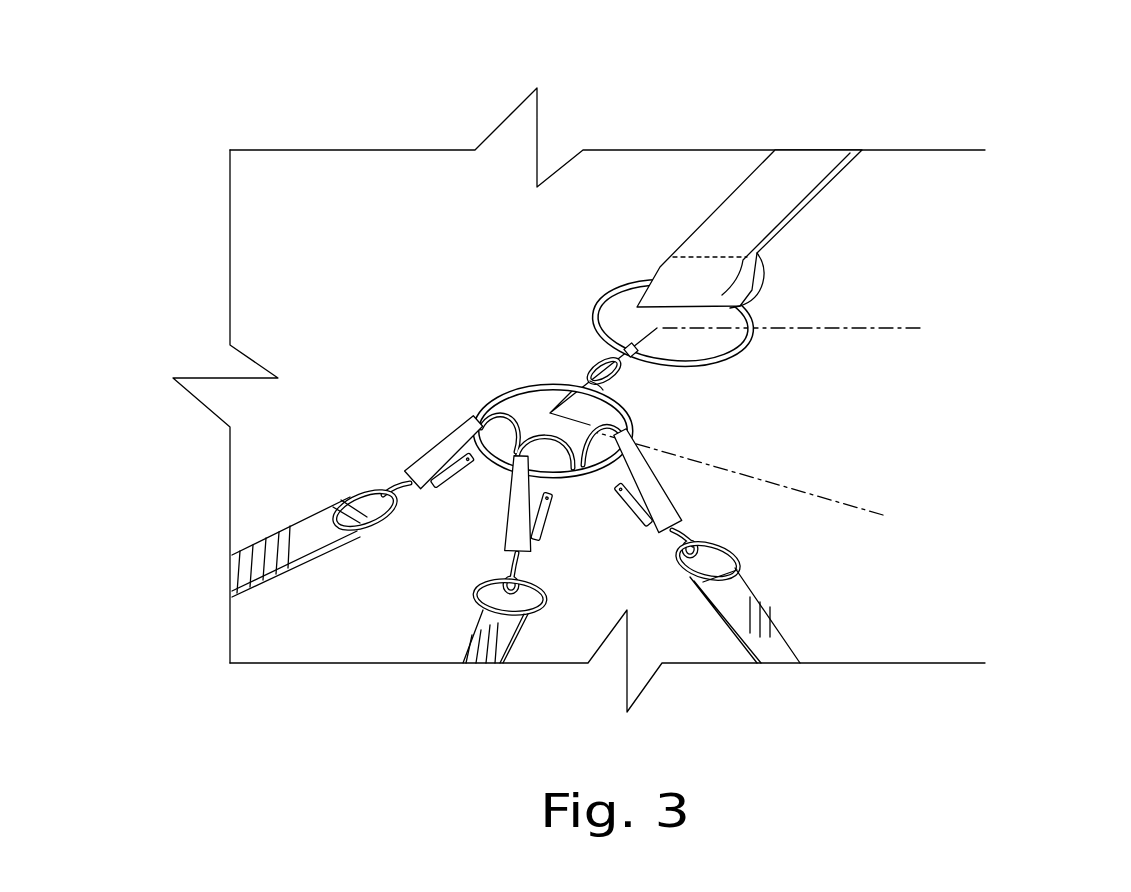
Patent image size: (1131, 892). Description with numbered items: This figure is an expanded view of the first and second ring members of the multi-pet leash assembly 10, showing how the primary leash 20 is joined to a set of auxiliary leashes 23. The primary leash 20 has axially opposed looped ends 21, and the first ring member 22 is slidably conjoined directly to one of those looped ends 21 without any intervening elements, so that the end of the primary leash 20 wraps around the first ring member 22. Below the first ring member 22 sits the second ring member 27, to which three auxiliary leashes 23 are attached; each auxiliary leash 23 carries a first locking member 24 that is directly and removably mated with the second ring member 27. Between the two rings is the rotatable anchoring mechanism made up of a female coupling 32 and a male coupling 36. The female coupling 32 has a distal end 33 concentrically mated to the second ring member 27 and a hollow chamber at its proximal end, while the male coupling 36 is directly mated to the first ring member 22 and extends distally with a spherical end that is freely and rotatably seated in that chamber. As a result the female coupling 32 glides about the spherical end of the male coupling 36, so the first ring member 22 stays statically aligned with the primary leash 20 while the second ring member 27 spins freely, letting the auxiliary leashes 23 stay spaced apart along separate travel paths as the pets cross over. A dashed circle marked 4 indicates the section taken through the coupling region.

The assembly 10 is at (1063, 138).
The primary leash 20 is at (778, 192).
The looped ends 21 is at (753, 278).
The first ring member 22 is at (745, 338).
The auxiliary leashes 23 is at (280, 558).
The first locking members 24 is at (420, 455).
The second ring member 27 is at (627, 413).
The female coupling 32 is at (613, 350).
The distal end 33 is at (567, 380).
The male coupling 36 is at (597, 357).
The section line 4 is at (757, 421).